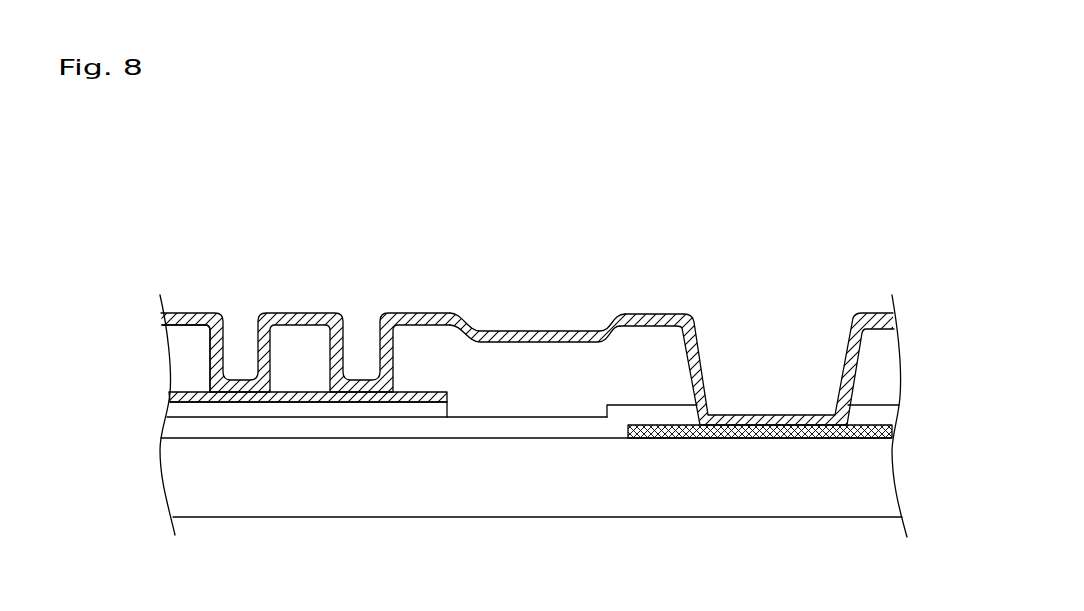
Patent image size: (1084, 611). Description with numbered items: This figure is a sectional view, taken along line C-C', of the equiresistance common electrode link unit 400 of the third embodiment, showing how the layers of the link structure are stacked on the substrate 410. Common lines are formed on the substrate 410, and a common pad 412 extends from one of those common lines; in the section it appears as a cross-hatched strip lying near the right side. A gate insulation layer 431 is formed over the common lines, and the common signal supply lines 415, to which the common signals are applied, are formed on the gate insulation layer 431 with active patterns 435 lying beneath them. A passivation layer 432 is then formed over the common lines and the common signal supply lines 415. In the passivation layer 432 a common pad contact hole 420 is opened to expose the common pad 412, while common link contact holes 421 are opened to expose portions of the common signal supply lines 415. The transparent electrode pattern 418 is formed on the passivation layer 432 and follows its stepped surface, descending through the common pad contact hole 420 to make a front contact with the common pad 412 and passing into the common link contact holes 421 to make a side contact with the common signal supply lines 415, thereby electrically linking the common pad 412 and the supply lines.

The organic light emitting display device 400 is at (597, 208).
The substrate 410 is at (548, 493).
The common pad 412 is at (894, 432).
The common signal supply line 415 is at (433, 391).
The transparent electrode pattern 418 is at (515, 332).
The common pad contact hole 420 is at (782, 313).
The common link contact hole 421 is at (237, 313).
The gate insulation layer 431 is at (175, 427).
The passivation layer 432 is at (187, 360).
The active pattern 435 is at (175, 408).